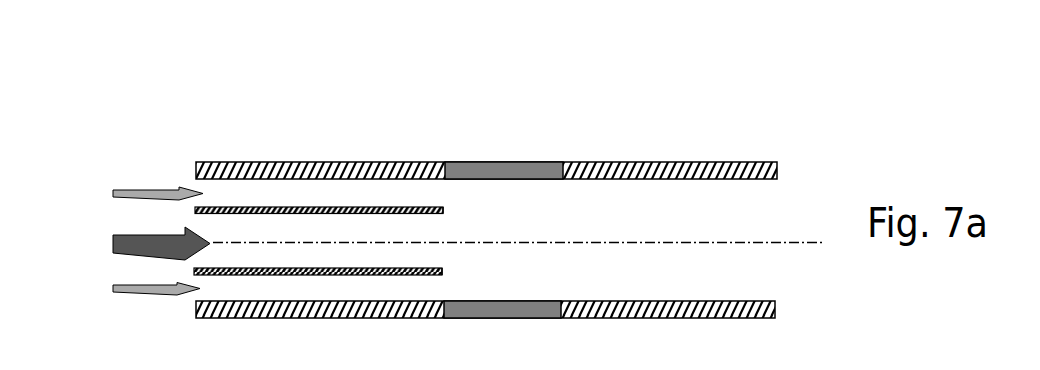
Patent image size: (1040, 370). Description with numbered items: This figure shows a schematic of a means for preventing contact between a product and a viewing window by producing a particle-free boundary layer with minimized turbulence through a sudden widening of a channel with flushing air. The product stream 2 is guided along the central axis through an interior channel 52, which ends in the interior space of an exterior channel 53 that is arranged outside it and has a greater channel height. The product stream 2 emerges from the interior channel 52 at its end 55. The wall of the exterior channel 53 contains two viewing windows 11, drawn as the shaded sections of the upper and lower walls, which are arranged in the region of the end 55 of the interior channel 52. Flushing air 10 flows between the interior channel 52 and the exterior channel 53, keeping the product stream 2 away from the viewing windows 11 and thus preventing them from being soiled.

The product stream 2 is at (452, 243).
The flushing air 10 is at (138, 237).
The viewing windows 11 is at (508, 312).
The interior channel 52 is at (288, 203).
The exterior channel 53 is at (622, 165).
The end of the interior channel 55 is at (443, 203).